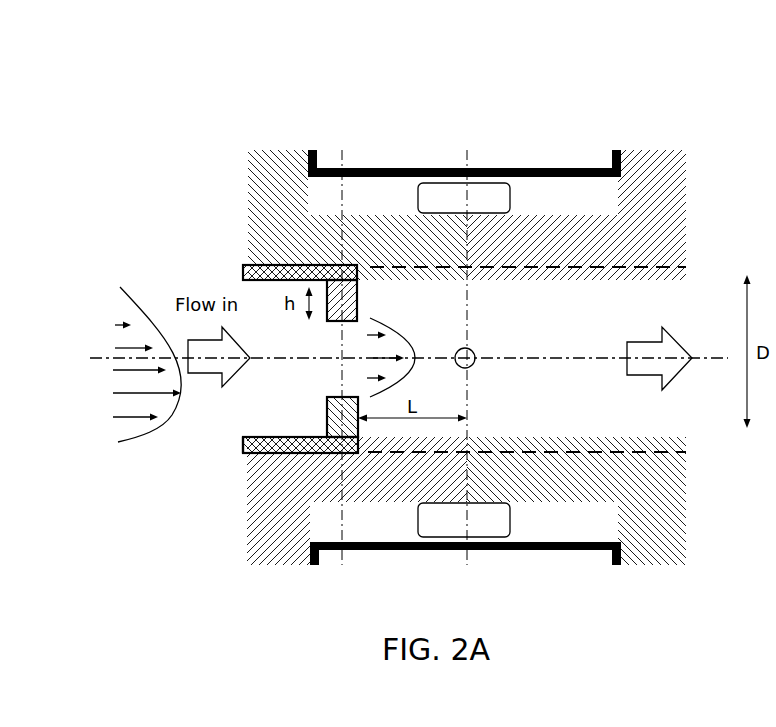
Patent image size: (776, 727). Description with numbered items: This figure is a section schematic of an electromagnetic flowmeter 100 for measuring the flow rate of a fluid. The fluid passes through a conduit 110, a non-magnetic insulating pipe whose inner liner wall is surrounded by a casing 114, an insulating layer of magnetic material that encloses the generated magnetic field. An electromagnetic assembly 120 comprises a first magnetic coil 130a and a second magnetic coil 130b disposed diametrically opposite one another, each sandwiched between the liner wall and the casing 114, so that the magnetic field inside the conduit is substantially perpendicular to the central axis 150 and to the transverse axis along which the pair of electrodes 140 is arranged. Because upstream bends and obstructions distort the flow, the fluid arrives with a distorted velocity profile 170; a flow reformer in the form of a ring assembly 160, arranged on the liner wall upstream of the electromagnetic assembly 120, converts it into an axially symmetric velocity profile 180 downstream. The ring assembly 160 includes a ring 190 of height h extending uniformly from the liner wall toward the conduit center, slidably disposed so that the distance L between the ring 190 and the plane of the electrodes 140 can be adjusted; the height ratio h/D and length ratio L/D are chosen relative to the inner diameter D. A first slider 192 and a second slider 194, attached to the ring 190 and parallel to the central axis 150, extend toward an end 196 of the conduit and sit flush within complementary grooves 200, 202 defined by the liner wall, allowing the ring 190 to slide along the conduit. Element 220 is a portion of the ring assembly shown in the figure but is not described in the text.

The electromagnetic flowmeter 100 is at (227, 62).
The conduit 110 is at (283, 147).
The casing 114 is at (537, 168).
The electromagnetic assembly 120 is at (458, 183).
The first magnetic coil 130a is at (418, 195).
The second magnetic coil 130b is at (418, 512).
The pair of electrodes 140 is at (473, 364).
The central axis 150 is at (697, 355).
The ring assembly 160 is at (240, 443).
The distorted velocity profile of fluid 170 is at (120, 287).
The axially symmetric velocity profile of fluid 180 is at (415, 347).
The ring 190 is at (325, 394).
The first slider 192 is at (245, 436).
The second slider 194 is at (253, 281).
The end of the conduit 196 is at (247, 505).
The groove 200 is at (247, 453).
The groove 202 is at (247, 266).
The upper step block 220 is at (358, 287).